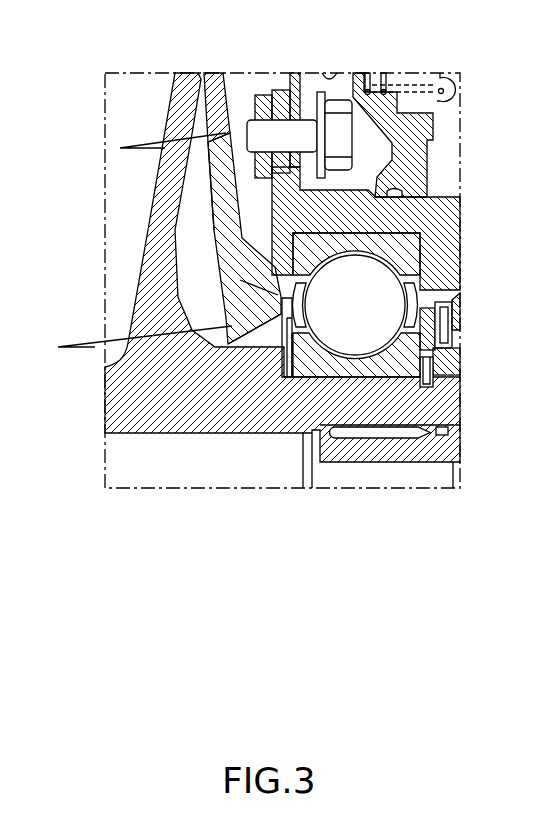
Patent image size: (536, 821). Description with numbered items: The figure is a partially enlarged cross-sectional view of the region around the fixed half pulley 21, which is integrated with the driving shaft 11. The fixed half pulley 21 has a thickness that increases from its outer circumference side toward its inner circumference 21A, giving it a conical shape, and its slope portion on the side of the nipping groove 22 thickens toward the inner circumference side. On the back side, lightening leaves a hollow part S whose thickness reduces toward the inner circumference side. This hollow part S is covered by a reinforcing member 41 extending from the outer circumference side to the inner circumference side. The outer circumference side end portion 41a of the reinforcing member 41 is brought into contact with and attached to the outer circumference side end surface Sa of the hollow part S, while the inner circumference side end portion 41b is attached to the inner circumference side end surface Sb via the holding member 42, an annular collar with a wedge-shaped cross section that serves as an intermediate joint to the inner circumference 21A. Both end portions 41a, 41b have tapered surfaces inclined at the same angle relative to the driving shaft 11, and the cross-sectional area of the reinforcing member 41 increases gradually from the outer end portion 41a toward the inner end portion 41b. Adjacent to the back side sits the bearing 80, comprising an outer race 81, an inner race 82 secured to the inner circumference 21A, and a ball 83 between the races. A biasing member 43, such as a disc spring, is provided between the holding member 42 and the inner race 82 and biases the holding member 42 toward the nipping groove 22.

The driving shaft 11 is at (123, 415).
The fixed half pulley 21 is at (200, 76).
The inner circumference 21A is at (283, 350).
The nipping groove 22 is at (149, 108).
The reinforcing member 41 is at (235, 163).
The outer circumference side end portion 41a is at (211, 145).
The inner circumference side end portion 41b is at (228, 327).
The holding member 42 is at (268, 330).
The biasing member 43 is at (297, 378).
The bearing 80 is at (359, 414).
The outer race 81 is at (305, 272).
The inner race 82 is at (366, 362).
The ball 83 is at (367, 332).
The hollow part S is at (205, 270).
The outer circumference side end surface Sa is at (212, 162).
The inner circumference side end surface Sb is at (213, 350).